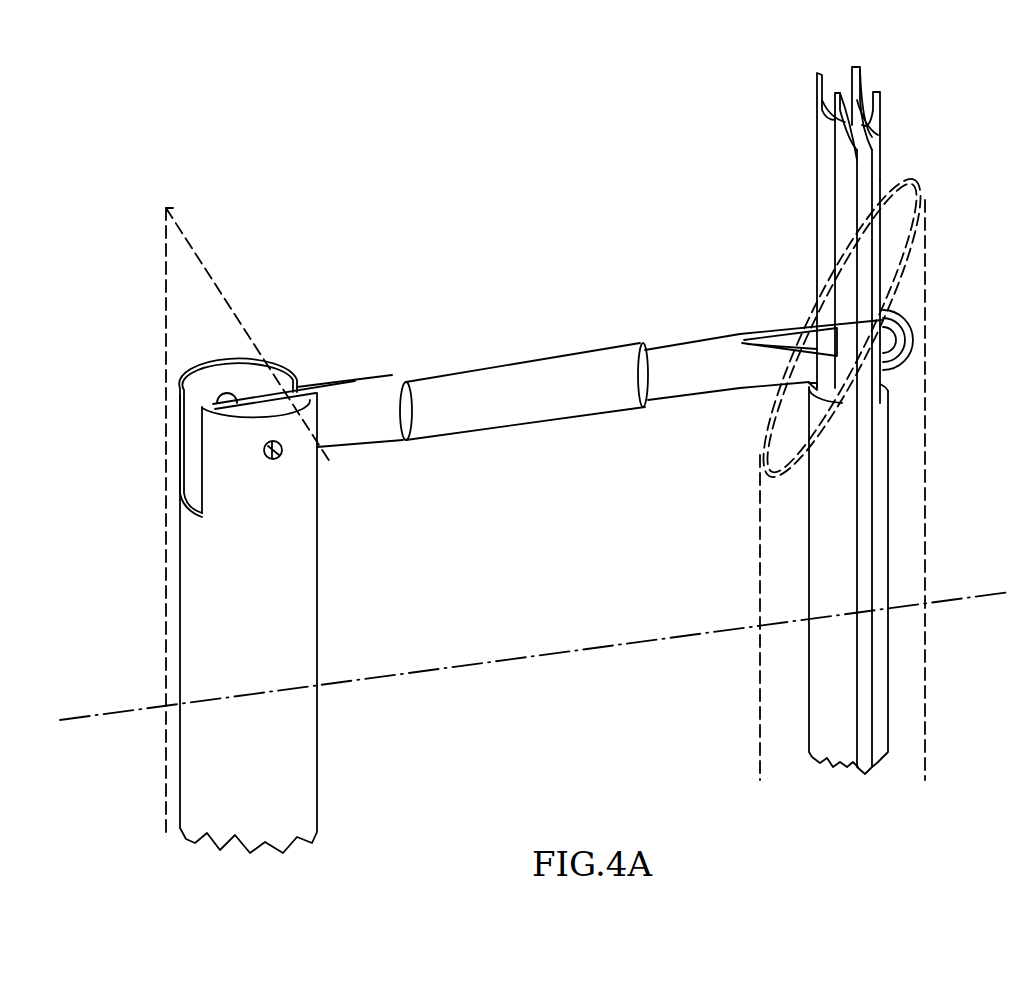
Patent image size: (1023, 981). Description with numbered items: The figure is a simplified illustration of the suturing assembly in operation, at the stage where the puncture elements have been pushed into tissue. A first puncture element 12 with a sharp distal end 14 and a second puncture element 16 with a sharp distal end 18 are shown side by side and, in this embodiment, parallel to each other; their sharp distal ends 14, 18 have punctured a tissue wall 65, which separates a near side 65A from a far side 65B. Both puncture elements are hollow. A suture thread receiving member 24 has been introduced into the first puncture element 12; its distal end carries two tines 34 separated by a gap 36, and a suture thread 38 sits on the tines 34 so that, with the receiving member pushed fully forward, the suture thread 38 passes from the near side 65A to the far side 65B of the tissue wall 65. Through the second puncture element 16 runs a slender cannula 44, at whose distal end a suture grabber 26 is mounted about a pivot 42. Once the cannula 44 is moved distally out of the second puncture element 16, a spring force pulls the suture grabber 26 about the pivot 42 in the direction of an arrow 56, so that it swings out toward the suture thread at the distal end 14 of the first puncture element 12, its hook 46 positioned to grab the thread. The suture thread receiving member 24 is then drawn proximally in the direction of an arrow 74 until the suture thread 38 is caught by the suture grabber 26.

The first puncture element 12 is at (918, 478).
The sharp distal end 14 is at (920, 263).
The second puncture element 16 is at (182, 350).
The sharp distal end 18 is at (182, 262).
The suture thread receiving member 24 is at (815, 188).
The suture grabber 26 is at (495, 368).
The tines 34 is at (878, 160).
The gap 36 is at (884, 377).
The suture thread 38 is at (877, 93).
The pivot 42 is at (272, 460).
The slender cannula 44 is at (218, 446).
The hook 46 is at (912, 327).
The arrow 56 is at (287, 328).
The tissue wall 65 is at (418, 673).
The near side 65A is at (581, 749).
The far side 65B is at (592, 574).
The arrow 74 is at (785, 210).